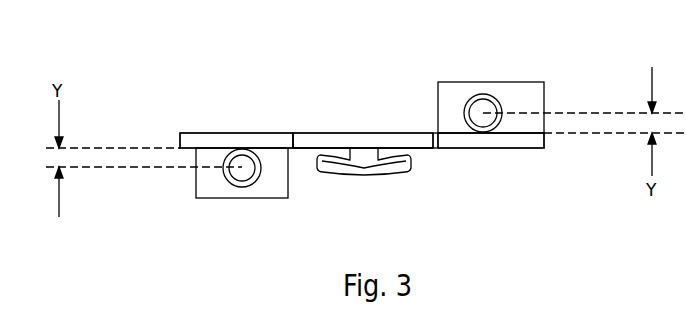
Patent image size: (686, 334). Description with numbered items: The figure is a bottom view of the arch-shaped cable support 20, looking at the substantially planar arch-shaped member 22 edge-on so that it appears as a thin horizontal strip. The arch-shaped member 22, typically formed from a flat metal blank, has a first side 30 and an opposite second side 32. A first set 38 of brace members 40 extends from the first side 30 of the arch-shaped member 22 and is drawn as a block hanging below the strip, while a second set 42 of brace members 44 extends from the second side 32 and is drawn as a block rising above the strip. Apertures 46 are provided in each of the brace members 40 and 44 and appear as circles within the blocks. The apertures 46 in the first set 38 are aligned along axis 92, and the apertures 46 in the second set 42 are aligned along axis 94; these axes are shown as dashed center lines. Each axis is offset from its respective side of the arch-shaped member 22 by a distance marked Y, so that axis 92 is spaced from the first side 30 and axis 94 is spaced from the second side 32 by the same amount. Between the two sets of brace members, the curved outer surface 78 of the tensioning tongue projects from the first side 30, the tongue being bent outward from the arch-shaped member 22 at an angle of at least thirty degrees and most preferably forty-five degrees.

The arch-shaped cable support 20 is at (262, 113).
The arch-shaped member 22 is at (493, 139).
The first side 30 is at (425, 158).
The second side 32 is at (321, 122).
The first set of brace members 38 is at (200, 183).
The brace member 40 is at (218, 194).
The second set of brace members 42 is at (448, 109).
The brace member 44 is at (530, 106).
The aperture 46 is at (241, 172).
The curved outer surface 78 is at (366, 186).
The axis 92 is at (245, 170).
The axis 94 is at (482, 111).